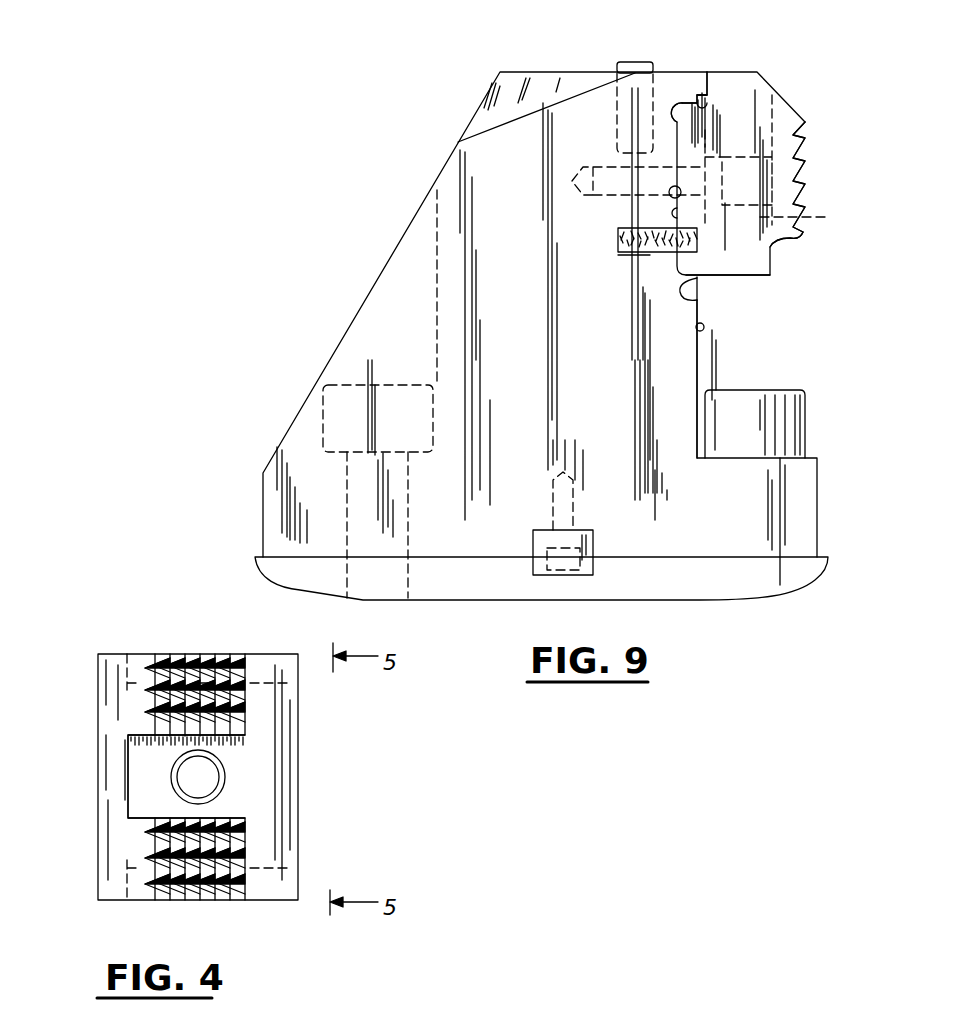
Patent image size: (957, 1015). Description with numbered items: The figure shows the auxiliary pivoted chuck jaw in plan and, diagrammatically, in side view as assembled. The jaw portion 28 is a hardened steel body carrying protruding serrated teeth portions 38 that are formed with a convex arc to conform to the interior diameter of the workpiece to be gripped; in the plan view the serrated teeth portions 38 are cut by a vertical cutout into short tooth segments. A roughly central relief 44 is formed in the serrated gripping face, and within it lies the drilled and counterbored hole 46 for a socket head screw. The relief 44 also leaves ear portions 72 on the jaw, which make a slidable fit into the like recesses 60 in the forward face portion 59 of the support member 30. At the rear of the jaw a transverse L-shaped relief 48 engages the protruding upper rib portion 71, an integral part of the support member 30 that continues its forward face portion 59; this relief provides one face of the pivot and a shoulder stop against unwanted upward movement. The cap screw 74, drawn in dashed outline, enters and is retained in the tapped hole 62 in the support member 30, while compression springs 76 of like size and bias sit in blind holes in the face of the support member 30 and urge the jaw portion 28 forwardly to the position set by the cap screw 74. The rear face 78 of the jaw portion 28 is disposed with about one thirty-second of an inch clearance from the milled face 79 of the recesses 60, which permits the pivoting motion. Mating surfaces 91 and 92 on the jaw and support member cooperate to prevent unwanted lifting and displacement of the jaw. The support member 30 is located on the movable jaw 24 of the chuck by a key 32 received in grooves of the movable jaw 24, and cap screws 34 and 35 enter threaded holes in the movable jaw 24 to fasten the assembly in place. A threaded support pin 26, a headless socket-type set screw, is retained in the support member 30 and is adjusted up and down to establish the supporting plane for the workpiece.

In FIG. 9, the movable jaw 24 is at (496, 590).
In FIG. 9, the support pin 26 is at (633, 73).
In FIG. 9, the jaw portion 28 is at (763, 85).
In FIG. 4, the jaw portion 28 is at (97, 910).
In FIG. 9, the support member 30 is at (405, 270).
In FIG. 9, the key 32 is at (538, 530).
In FIG. 9, the cap screw 34 is at (770, 392).
In FIG. 9, the cap screw 35 is at (340, 404).
In FIG. 9, the serrated teeth portion 38 is at (806, 150).
In FIG. 4, the serrated teeth portion 38 is at (200, 900).
In FIG. 4, the relief 44 is at (148, 751).
In FIG. 4, the drilled and counterbored hole 46 is at (212, 777).
In FIG. 9, the L-shaped relief 48 is at (707, 72).
In FIG. 9, the forward face portion 59 is at (697, 325).
In FIG. 9, the recess 60 is at (674, 212).
In FIG. 9, the tapped hole 62 is at (603, 165).
In FIG. 9, the upper rib portion 71 is at (700, 82).
In FIG. 9, the ear portion 72 is at (703, 274).
In FIG. 9, the cap screw 74 is at (807, 215).
In FIG. 9, the compression spring 76 is at (633, 252).
In FIG. 9, the rear face 78 is at (681, 190).
In FIG. 9, the milled face 79 is at (697, 302).
In FIG. 9, the surface 91 is at (703, 110).
In FIG. 9, the surface 92 is at (703, 109).